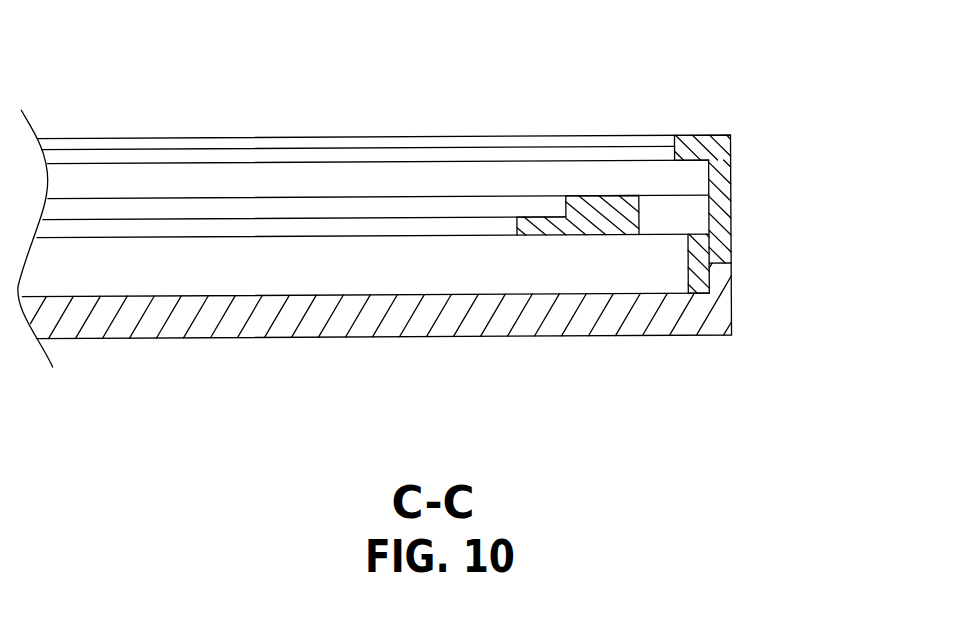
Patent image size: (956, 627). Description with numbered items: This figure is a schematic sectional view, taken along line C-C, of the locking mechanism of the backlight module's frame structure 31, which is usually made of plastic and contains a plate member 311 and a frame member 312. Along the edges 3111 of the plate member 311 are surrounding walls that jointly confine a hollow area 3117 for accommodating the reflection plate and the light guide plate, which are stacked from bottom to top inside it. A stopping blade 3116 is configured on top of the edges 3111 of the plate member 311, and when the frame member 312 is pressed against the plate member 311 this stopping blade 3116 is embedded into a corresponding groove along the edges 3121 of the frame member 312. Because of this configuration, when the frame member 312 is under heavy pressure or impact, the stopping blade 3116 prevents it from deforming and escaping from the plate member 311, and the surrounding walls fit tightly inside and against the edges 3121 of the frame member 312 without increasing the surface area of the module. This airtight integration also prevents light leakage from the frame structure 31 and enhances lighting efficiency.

The frame structure 31 is at (722, 83).
The plate member 311 is at (588, 322).
The edges of the plate member 3111 is at (732, 312).
The stopping blade 3116 is at (732, 278).
The hollow area 3117 is at (202, 296).
The frame member 312 is at (711, 142).
The edges of the frame member 3121 is at (732, 203).